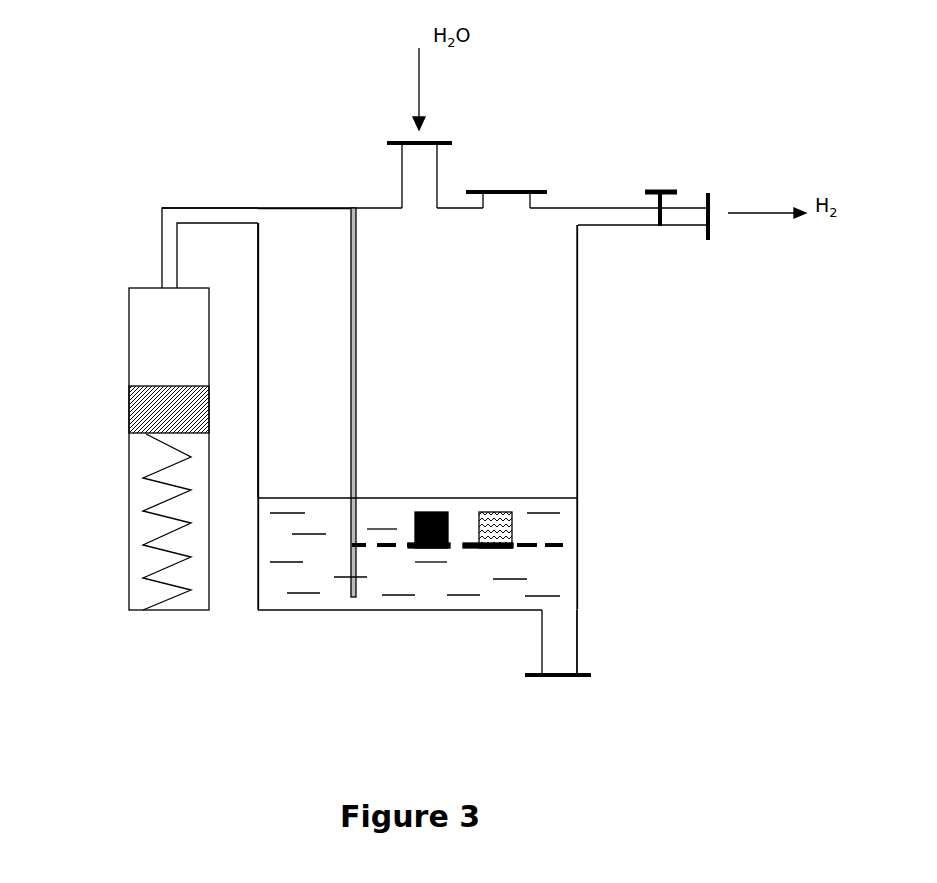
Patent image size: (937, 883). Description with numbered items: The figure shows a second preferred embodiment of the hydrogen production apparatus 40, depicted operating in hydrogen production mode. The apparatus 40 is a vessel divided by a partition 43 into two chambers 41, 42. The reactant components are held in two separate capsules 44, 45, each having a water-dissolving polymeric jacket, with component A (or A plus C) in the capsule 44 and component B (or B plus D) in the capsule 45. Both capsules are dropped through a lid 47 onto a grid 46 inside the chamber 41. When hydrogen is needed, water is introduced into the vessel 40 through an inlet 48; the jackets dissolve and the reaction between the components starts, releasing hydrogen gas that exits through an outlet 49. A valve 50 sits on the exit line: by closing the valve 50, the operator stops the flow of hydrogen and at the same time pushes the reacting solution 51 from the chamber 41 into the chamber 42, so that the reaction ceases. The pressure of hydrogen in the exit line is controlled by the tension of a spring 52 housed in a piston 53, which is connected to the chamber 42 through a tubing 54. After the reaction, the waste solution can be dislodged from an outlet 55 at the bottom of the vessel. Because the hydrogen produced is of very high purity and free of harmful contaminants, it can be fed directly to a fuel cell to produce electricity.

The apparatus 40 is at (650, 347).
The chamber 41 is at (495, 332).
The chamber 42 is at (322, 242).
The partition 43 is at (350, 405).
The capsule 44 is at (450, 522).
The capsule 45 is at (512, 525).
The grid 46 is at (550, 543).
The lid 47 is at (500, 185).
The inlet 48 is at (402, 179).
The outlet 49 is at (712, 206).
The valve 50 is at (660, 192).
The reacting solution 51 is at (537, 590).
The spring 52 is at (157, 540).
The piston 53 is at (155, 404).
The tubing 54 is at (162, 233).
The outlet 55 is at (550, 675).